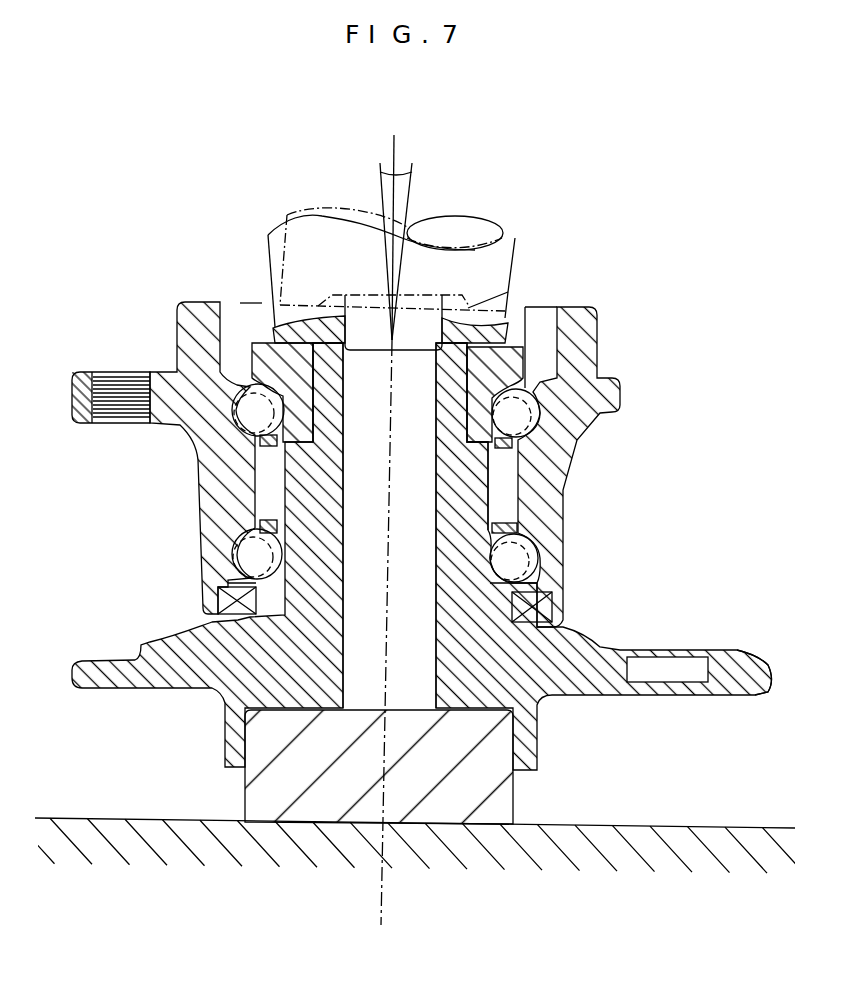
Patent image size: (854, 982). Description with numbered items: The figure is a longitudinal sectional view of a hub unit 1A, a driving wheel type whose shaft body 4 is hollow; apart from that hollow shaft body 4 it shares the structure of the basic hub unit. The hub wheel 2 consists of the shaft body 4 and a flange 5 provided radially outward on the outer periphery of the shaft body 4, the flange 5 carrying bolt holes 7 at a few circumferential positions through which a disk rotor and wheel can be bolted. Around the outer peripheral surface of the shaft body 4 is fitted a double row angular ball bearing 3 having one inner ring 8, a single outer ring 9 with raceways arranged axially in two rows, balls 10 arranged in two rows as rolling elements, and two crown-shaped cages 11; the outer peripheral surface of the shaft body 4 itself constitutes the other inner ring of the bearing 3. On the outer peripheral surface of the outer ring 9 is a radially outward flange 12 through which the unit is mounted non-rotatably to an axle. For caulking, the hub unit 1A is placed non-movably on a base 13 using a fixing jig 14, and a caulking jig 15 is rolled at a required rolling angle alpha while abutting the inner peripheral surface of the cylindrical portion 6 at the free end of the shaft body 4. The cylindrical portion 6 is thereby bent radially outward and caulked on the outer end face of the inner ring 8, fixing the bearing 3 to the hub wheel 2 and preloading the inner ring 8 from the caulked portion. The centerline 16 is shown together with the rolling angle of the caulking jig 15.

The hub unit 1A is at (421, 483).
The hub wheel 2 is at (422, 556).
The double row angular ball bearing 3 is at (605, 339).
The shaft body 4 is at (465, 508).
The flange 5 is at (752, 660).
The cylindrical portion 6 is at (505, 320).
The bolt holes 7 is at (670, 660).
The inner ring 8 is at (258, 337).
The outer ring 9 is at (210, 527).
The balls 10 is at (539, 424).
The crown-shaped cages 11 is at (262, 440).
The radially outward flange 12 is at (82, 387).
The base 13 is at (635, 826).
The fixing jig 14 is at (312, 813).
The caulking jig 15 is at (458, 214).
The center axis 16 is at (382, 910).